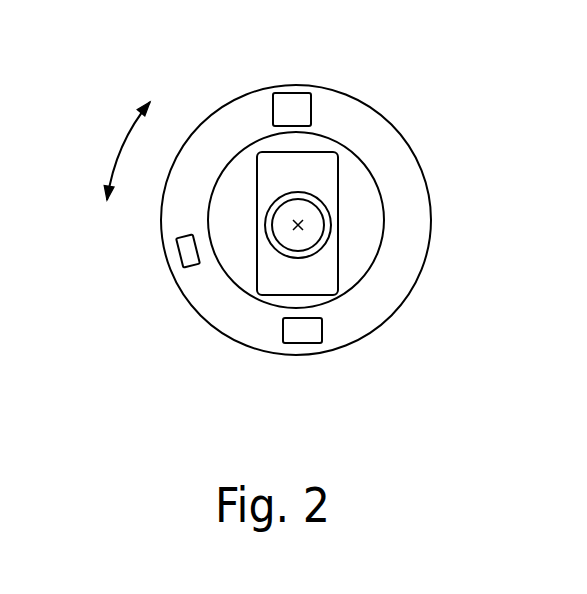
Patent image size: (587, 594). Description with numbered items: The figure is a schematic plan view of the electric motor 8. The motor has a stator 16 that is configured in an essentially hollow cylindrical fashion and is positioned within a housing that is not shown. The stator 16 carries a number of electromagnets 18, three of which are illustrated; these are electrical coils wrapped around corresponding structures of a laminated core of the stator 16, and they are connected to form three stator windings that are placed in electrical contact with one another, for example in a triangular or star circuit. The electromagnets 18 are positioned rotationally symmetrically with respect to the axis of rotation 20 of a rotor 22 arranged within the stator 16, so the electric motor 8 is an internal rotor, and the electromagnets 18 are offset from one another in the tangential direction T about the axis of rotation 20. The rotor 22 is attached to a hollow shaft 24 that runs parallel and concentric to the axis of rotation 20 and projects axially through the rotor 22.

The electric motor 8 is at (446, 80).
The stator 16 is at (352, 115).
The electromagnets 18 is at (292, 108).
The axis of rotation 20 is at (299, 228).
The rotor 22 is at (276, 170).
The hollow shaft 24 is at (328, 218).
The tangential direction T is at (123, 147).